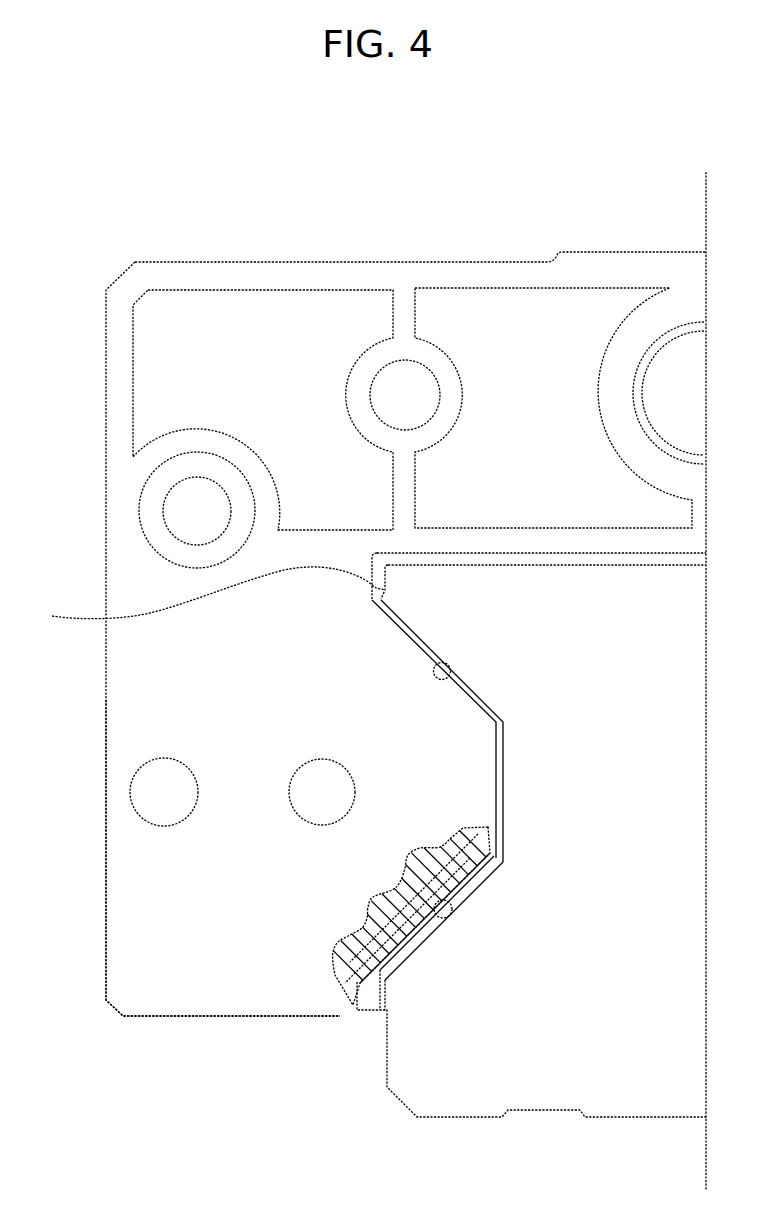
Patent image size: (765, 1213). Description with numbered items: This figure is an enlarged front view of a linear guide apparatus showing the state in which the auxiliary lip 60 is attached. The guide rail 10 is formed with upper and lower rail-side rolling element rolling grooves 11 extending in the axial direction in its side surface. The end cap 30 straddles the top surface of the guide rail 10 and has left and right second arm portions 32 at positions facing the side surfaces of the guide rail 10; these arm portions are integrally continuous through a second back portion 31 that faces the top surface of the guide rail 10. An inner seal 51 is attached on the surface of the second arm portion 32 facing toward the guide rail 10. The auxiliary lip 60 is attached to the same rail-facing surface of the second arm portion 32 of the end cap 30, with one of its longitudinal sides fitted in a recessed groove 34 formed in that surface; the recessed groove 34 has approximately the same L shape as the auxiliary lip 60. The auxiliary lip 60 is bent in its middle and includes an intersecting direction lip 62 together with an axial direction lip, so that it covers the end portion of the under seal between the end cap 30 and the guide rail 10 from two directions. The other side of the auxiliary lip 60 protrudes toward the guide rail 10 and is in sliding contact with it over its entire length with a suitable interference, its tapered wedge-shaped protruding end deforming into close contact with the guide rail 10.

The guide rail 10 is at (618, 804).
The rail-side rolling element rolling groove 11 is at (455, 678).
The end cap 30 is at (197, 262).
The second back portion 31 is at (616, 270).
The second arm portion 32 is at (157, 691).
The recessed groove 34 is at (470, 893).
The inner seal 51 is at (208, 597).
The auxiliary lip 60 is at (353, 1010).
The intersecting direction lip 62 is at (406, 943).